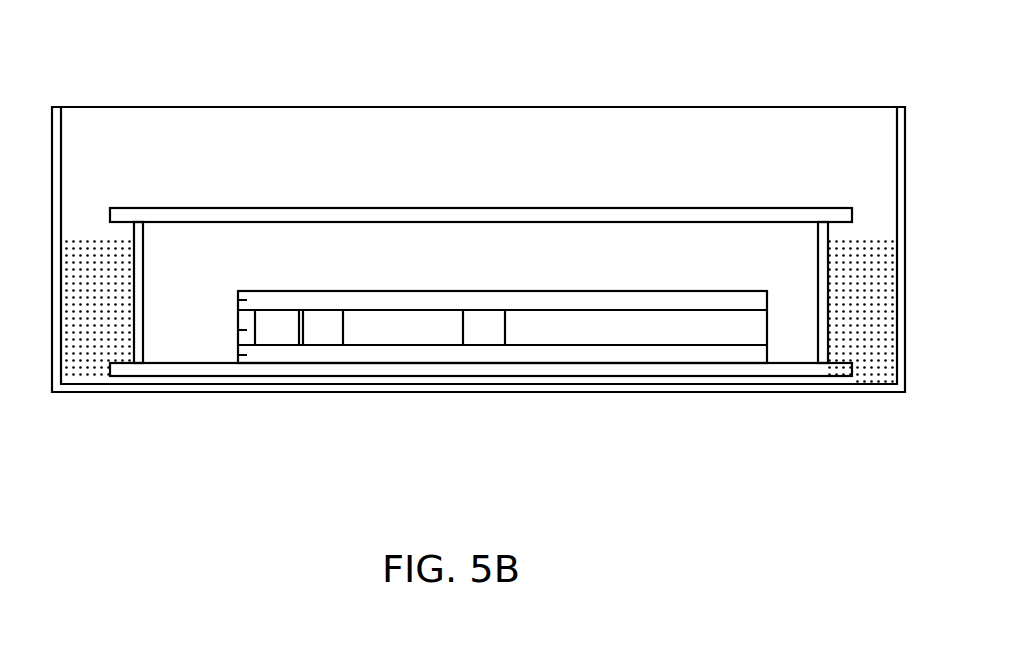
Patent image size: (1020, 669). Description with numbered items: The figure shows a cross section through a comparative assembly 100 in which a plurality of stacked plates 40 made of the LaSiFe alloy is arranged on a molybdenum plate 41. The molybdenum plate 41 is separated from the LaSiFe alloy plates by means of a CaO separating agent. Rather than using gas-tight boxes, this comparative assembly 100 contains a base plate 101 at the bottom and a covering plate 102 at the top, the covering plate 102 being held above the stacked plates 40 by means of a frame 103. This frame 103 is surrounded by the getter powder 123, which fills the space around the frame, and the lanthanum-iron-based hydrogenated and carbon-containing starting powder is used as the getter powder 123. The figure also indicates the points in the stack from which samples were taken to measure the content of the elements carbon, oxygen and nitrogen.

The comparative assembly 100 is at (487, 257).
The base plate 101 is at (590, 367).
The covering plate 102 is at (584, 215).
The frame 103 is at (832, 255).
The getter powder 123 is at (865, 327).
The stacked plates 40 is at (238, 355).
The molybdenum plate 41 is at (797, 362).